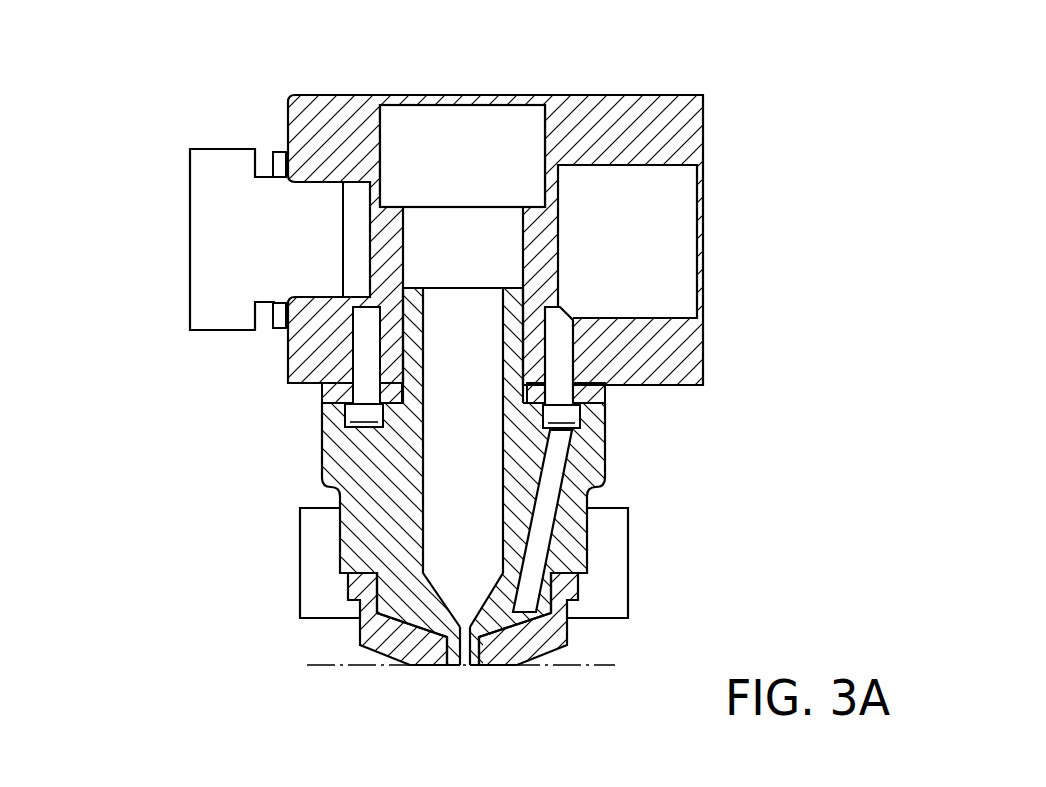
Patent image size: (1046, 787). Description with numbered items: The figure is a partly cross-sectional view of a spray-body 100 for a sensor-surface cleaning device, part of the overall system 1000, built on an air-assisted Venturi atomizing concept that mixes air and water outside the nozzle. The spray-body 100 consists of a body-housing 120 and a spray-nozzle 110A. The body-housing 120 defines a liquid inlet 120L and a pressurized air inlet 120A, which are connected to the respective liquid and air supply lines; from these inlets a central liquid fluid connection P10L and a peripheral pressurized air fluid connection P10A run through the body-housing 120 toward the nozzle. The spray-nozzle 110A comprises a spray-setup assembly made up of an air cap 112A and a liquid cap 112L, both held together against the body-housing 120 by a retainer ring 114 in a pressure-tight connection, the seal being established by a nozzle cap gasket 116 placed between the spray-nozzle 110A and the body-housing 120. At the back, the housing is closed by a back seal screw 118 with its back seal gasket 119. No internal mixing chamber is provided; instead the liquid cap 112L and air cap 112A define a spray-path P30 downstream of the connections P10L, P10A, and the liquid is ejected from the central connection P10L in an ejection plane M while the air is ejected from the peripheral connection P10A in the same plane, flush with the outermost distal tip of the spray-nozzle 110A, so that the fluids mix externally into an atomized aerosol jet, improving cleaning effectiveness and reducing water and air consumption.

The dispensing system 1000 is at (108, 84).
The spray-body 100 is at (508, 379).
The body-housing 120 is at (660, 140).
The liquid inlet 120L is at (462, 157).
The pressurized air inlet 120A is at (658, 264).
The pressurized air fluid connection P10A is at (560, 357).
The liquid fluid connection P10L is at (447, 458).
The spray-path P30 is at (463, 668).
The nozzle cap gasket 116 is at (322, 393).
The back seal screw 118 is at (208, 170).
The back seal gasket 119 is at (281, 150).
The spray-nozzle 110A is at (478, 514).
The retainer ring 114 is at (318, 532).
The air cap 112A is at (362, 637).
The liquid cap 112L is at (533, 660).
The ejection plane M is at (347, 668).